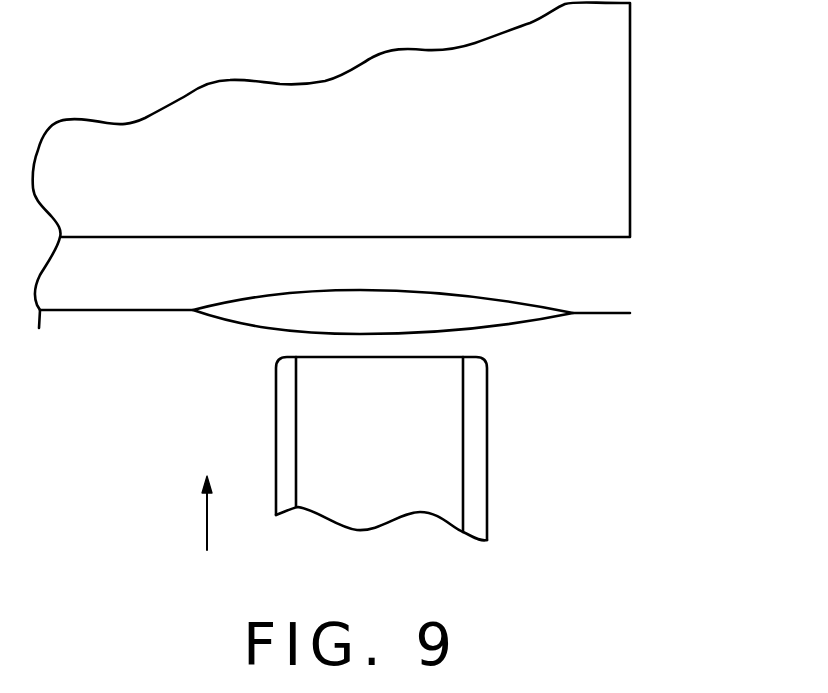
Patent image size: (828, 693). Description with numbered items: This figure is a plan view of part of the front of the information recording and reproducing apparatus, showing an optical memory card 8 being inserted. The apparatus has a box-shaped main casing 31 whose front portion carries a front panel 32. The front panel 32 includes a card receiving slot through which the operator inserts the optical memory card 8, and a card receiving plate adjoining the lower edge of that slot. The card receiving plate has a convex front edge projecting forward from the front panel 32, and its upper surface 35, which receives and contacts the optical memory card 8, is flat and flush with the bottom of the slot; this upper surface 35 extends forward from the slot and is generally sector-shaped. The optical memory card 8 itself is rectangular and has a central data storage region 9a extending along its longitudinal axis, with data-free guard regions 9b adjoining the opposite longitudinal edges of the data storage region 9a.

The main casing 31 is at (593, 169).
The front panel 32 is at (98, 290).
The upper surface of the card receiving plate 35 is at (297, 320).
The optical memory card 8 is at (488, 488).
The data storage region 9a is at (323, 455).
The guard regions 9b is at (285, 410).